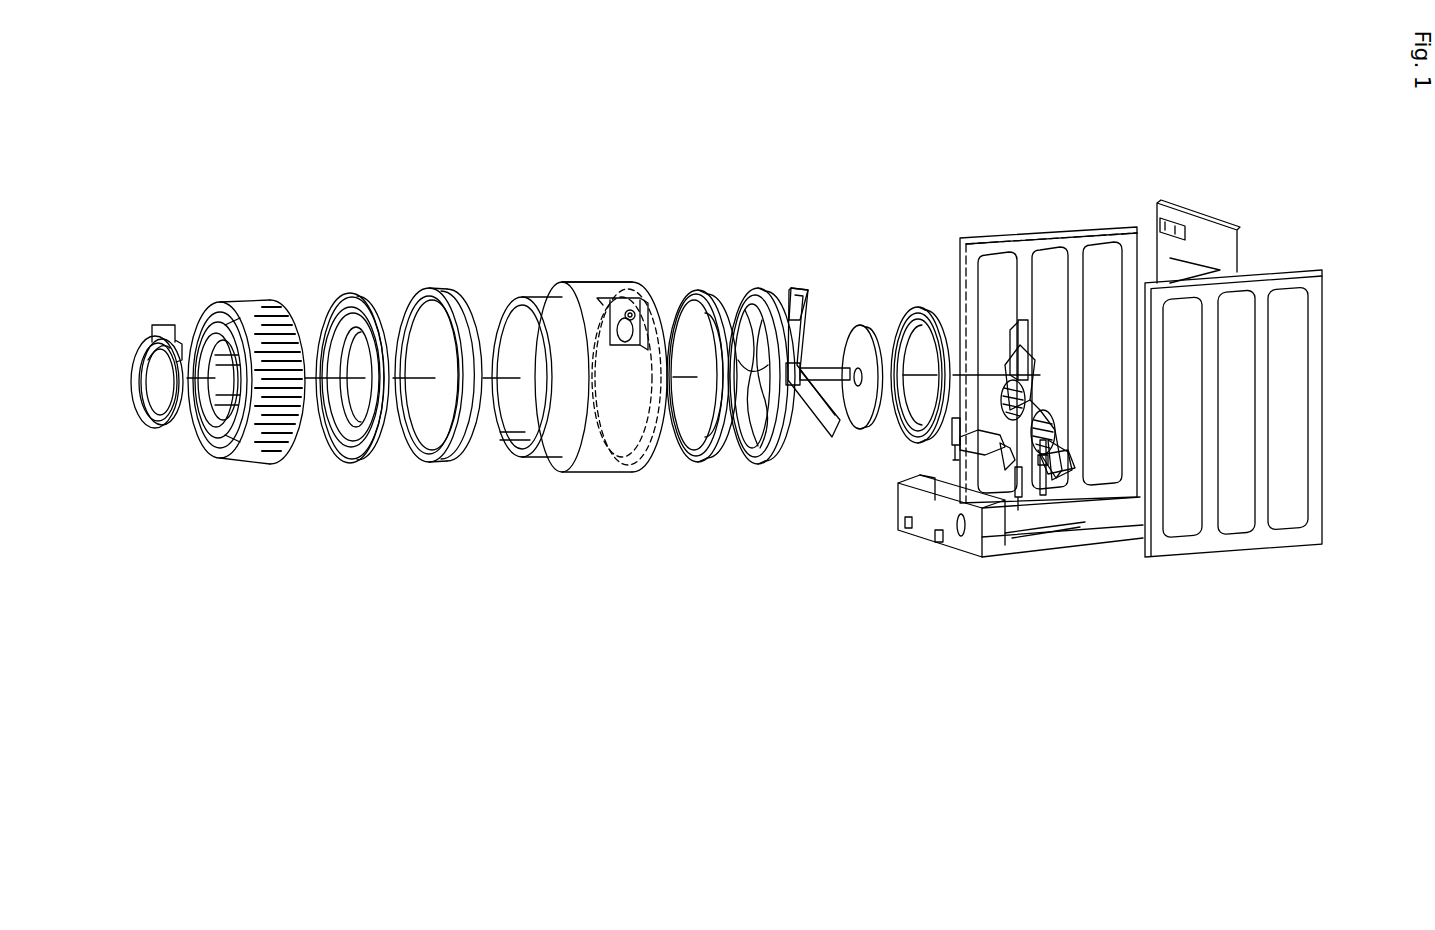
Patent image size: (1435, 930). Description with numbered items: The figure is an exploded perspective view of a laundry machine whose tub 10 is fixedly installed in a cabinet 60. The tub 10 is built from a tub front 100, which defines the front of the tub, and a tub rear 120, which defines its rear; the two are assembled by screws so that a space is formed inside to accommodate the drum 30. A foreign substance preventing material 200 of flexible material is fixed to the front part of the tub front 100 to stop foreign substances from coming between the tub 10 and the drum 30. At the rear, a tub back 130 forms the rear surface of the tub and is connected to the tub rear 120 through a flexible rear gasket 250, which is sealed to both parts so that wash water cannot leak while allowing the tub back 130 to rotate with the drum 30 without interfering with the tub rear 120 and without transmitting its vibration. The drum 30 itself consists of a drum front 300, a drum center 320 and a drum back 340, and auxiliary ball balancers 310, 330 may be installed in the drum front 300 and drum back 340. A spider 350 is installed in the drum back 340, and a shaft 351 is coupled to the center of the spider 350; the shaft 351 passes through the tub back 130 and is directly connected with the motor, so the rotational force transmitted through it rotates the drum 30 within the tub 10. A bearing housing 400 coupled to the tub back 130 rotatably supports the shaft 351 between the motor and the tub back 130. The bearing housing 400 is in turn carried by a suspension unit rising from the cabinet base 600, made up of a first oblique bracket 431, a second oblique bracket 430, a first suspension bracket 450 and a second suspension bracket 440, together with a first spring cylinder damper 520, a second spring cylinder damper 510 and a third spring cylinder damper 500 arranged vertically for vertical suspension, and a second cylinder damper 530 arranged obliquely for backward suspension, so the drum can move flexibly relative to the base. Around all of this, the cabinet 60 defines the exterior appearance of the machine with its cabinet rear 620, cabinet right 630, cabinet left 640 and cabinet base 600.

The tub 10 is at (270, 237).
The drum 30 is at (355, 533).
The cabinet 60 is at (1112, 130).
The tub front 100 is at (254, 303).
The tub rear 120 is at (586, 287).
The tub back 130 is at (866, 325).
The foreign substance preventing material 200 is at (143, 420).
The rear gasket 250 is at (915, 310).
The drum front 300 is at (340, 436).
The auxiliary ball balancer 310 is at (422, 455).
The drum center 320 is at (507, 447).
The auxiliary ball balancer 330 is at (687, 448).
The drum back 340 is at (737, 455).
The spider 350 is at (817, 455).
The shaft 351 is at (833, 290).
The bearing housing 400 is at (1040, 355).
The second oblique bracket 430 is at (1040, 405).
The first oblique bracket 431 is at (1067, 443).
The second suspension bracket 440 is at (990, 413).
The first suspension bracket 450 is at (1042, 490).
The third spring cylinder damper 500 is at (1073, 455).
The second spring cylinder damper 510 is at (955, 448).
The first spring cylinder damper 520 is at (1015, 455).
The second cylinder damper 530 is at (1000, 443).
The cabinet base 600 is at (1082, 543).
The cabinet rear 620 is at (1202, 230).
The cabinet right 630 is at (1090, 240).
The cabinet left 640 is at (1263, 285).